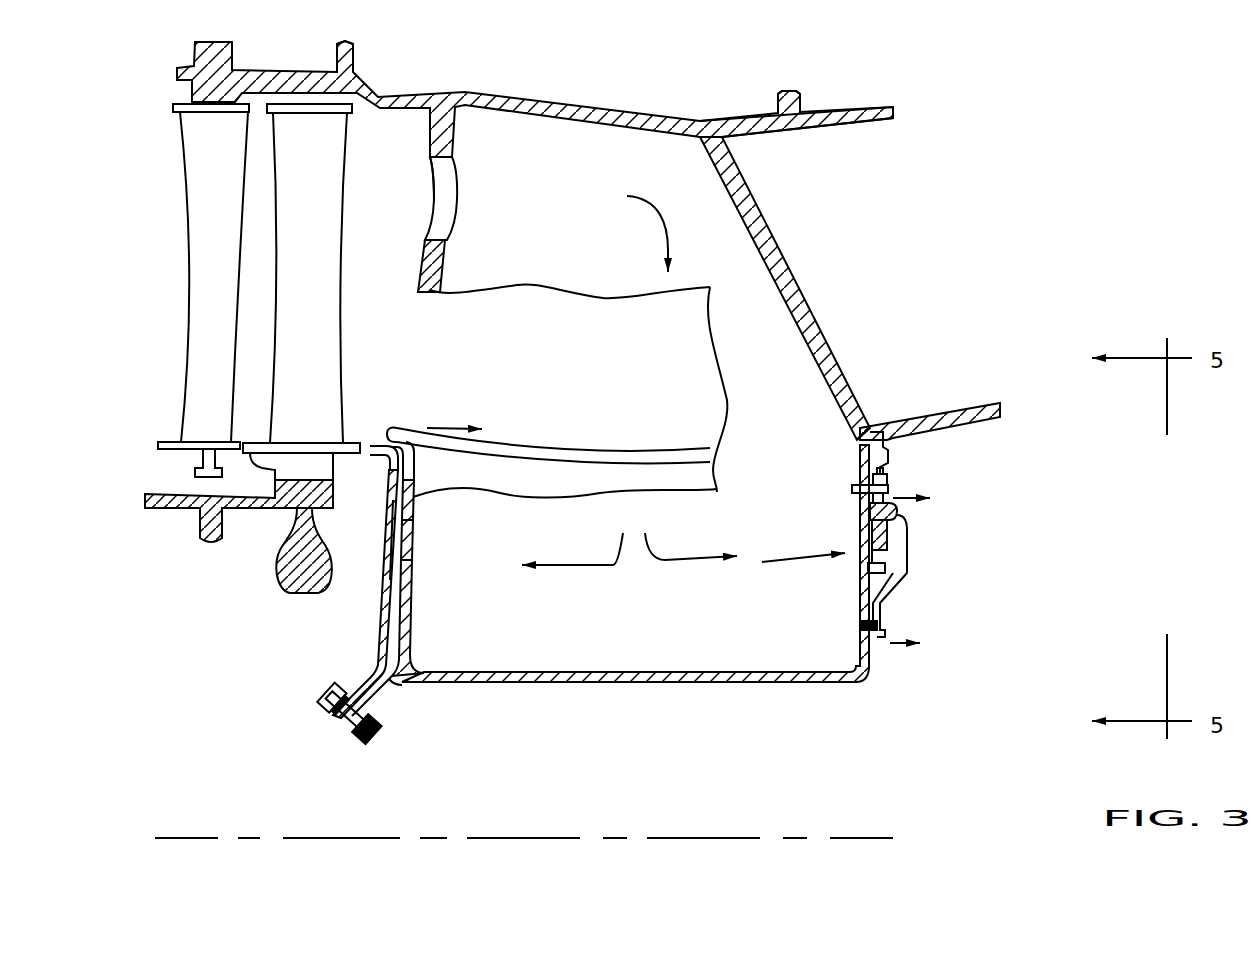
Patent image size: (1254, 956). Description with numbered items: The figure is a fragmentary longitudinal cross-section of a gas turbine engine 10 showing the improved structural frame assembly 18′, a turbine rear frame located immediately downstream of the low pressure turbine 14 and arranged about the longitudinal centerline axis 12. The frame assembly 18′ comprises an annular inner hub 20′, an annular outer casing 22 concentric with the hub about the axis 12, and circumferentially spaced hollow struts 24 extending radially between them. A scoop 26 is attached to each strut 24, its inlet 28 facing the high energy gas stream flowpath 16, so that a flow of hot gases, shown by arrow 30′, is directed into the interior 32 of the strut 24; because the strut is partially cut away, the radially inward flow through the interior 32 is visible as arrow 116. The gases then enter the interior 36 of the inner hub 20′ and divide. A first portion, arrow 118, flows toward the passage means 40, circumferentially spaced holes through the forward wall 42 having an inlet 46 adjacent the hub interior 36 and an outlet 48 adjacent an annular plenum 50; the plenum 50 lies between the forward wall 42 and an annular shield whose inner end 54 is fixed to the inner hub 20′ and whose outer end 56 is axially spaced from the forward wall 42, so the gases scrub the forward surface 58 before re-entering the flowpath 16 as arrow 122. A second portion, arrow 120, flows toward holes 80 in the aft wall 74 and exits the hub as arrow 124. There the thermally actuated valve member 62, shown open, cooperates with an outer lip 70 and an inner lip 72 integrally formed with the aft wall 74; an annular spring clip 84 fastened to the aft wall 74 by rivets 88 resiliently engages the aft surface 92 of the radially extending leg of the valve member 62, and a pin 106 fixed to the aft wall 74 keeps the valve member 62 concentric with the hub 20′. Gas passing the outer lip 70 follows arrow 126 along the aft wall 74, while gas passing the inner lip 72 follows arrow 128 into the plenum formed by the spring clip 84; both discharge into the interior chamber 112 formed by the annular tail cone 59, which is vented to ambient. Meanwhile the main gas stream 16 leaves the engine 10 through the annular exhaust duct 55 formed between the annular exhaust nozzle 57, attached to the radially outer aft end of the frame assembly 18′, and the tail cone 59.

The gas turbine engine 10 is at (781, 78).
The longitudinal centerline axis 12 is at (678, 835).
The low pressure turbine 14 is at (331, 71).
The high energy gas stream flowpath 16 is at (244, 188).
The structural frame assembly 18′ is at (660, 108).
The annular inner hub 20′ is at (647, 687).
The annular outer casing 22 is at (507, 95).
The hollow strut 24 is at (450, 393).
The scoop 26 is at (438, 214).
The inlet 28 is at (434, 191).
The flow of hot gases 30′ is at (400, 185).
The strut interior 32 is at (556, 273).
The inner hub interior 36 is at (584, 650).
The passage means 40 is at (412, 545).
The forward wall 42 is at (417, 533).
The inlet 46 is at (411, 573).
The outlet 48 is at (387, 575).
The annular plenum 50 is at (388, 643).
The inner end 54 is at (336, 712).
The annular exhaust duct 55 is at (890, 203).
The outer end 56 is at (380, 462).
The annular exhaust nozzle 57 is at (820, 128).
The forward surface 58 is at (432, 495).
The annular tail cone 59 is at (907, 417).
The valve member 62 is at (907, 511).
The outer lip 70 is at (872, 523).
The inner lip 72 is at (868, 569).
The aft wall 74 is at (862, 602).
The holes 80 is at (868, 543).
The annular spring clip 84 is at (903, 593).
The rivets 88 is at (856, 628).
The aft surface 92 is at (910, 547).
The pin 106 is at (852, 489).
The interior chamber 112 is at (1052, 457).
The flow arrow 116 is at (663, 231).
The flow arrow 118 is at (617, 566).
The flow arrow 120 is at (688, 560).
The flow arrow 122 is at (425, 430).
The flow arrow 124 is at (783, 560).
The flow arrow 126 is at (897, 493).
The flow arrow 128 is at (891, 646).